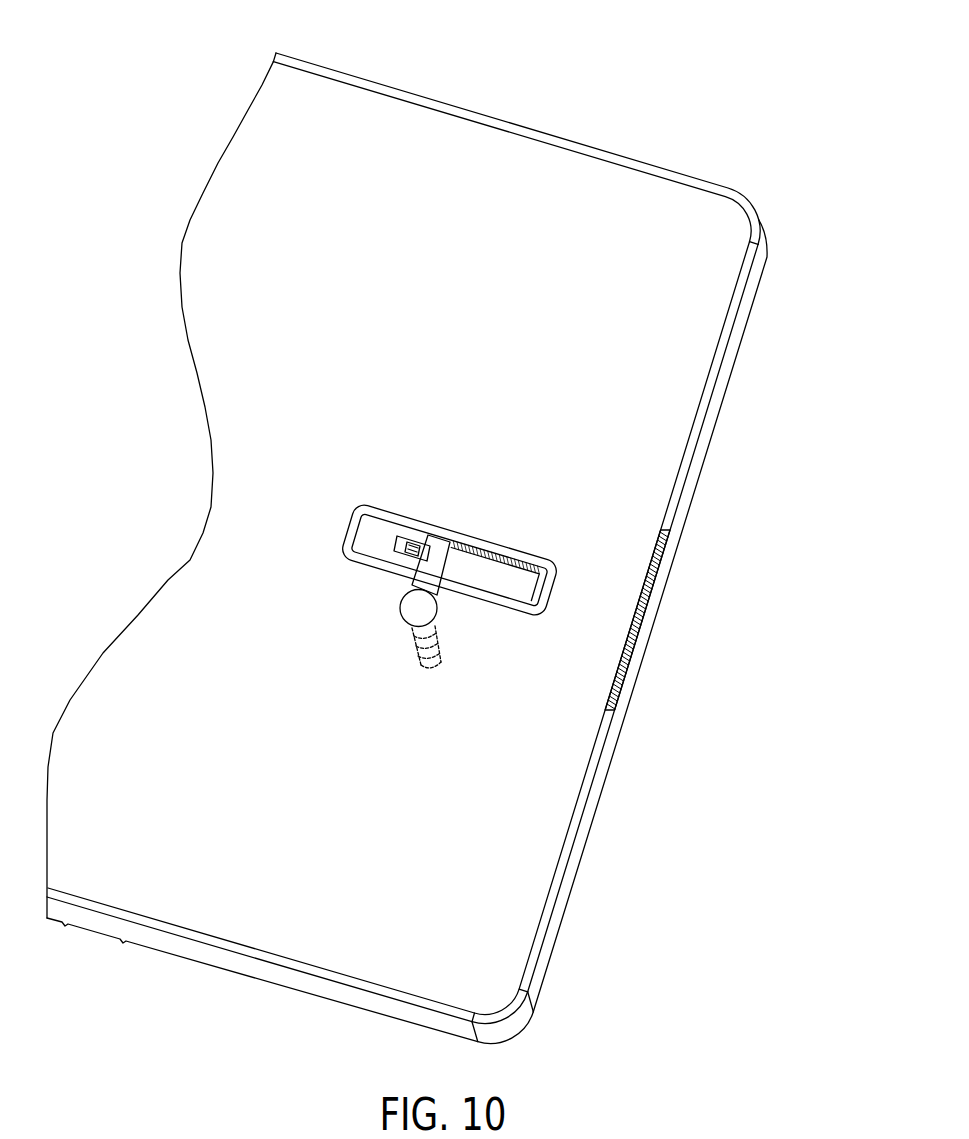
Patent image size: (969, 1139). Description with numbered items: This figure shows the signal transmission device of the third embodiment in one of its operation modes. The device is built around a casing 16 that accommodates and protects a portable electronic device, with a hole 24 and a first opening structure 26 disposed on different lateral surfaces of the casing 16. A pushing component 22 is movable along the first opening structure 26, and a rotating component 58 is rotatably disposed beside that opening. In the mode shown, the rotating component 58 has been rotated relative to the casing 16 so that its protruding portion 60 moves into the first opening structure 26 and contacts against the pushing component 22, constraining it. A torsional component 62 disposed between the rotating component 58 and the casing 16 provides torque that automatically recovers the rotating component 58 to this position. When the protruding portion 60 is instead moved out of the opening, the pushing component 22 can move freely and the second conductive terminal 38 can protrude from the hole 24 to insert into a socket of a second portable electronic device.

The casing 16 is at (607, 175).
The pushing component 22 is at (417, 545).
The hole 24 is at (616, 711).
The first opening structure 26 is at (378, 526).
The second conductive terminal 38 is at (652, 596).
The rotating component 58 is at (400, 605).
The protruding portion 60 is at (438, 547).
The torsional component 62 is at (415, 644).